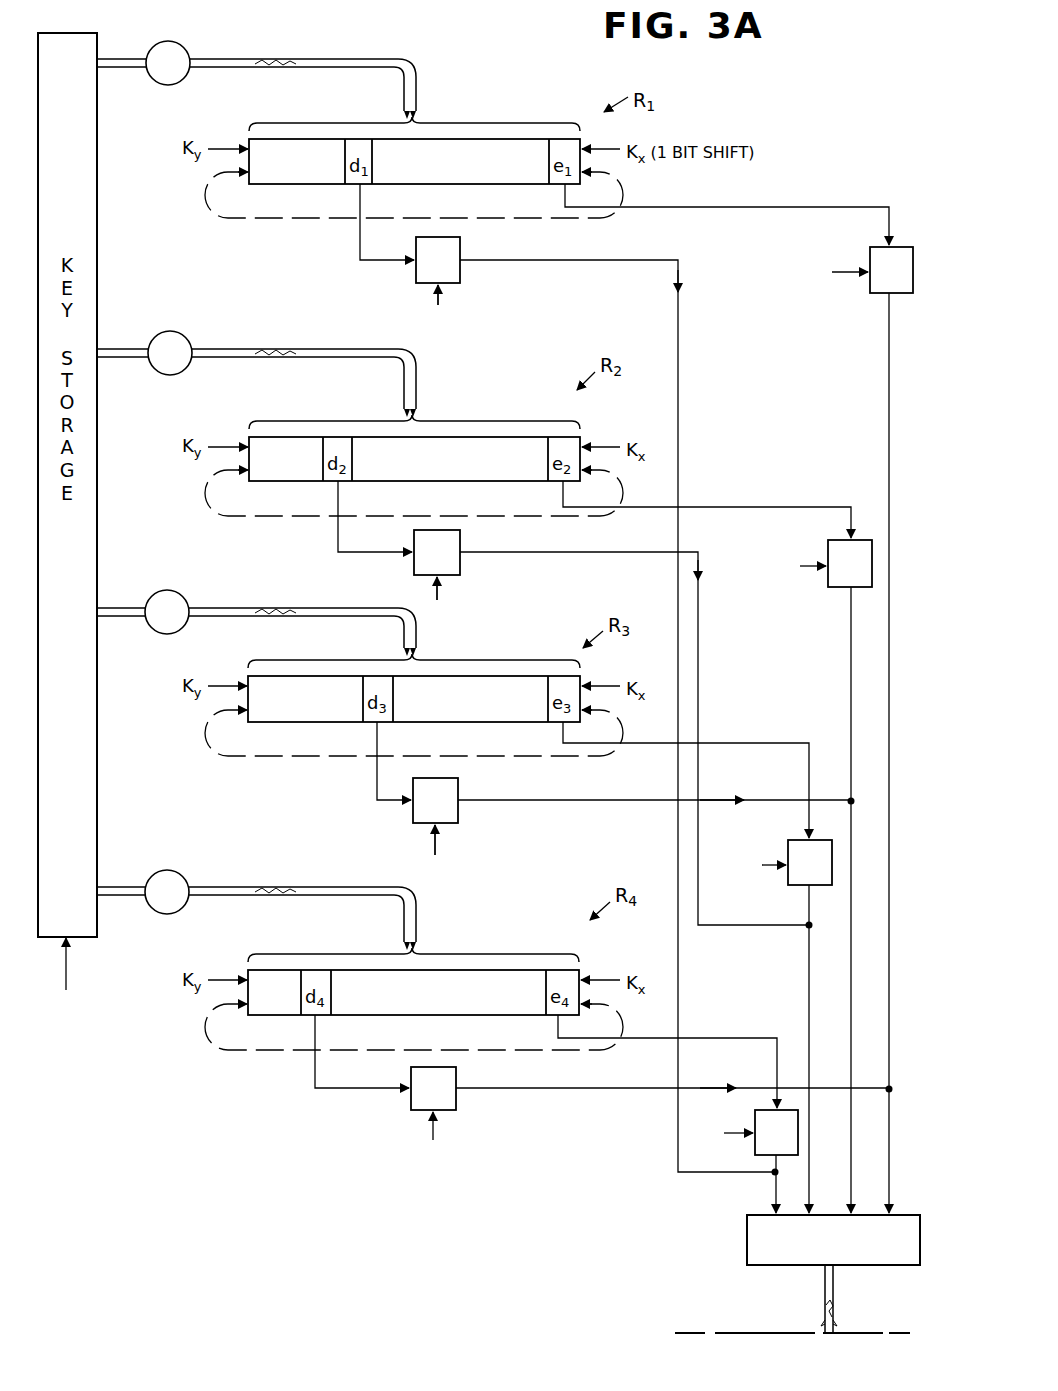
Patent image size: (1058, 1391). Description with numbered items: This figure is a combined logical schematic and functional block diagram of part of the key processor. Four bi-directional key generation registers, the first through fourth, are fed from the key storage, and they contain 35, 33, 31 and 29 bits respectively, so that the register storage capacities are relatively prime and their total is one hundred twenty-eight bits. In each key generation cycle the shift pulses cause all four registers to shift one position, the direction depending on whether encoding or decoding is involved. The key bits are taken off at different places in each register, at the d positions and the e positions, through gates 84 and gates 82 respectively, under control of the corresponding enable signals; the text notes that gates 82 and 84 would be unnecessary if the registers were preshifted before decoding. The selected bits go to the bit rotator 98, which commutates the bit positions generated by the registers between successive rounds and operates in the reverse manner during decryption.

The register bit count 29 is at (256, 910).
The register bit count 31 is at (256, 623).
The register bit count 33 is at (256, 374).
The register bit count 35 is at (256, 80).
The gate 82 is at (770, 1158).
The gate 84 is at (466, 1110).
The bit rotator 98 is at (748, 1256).